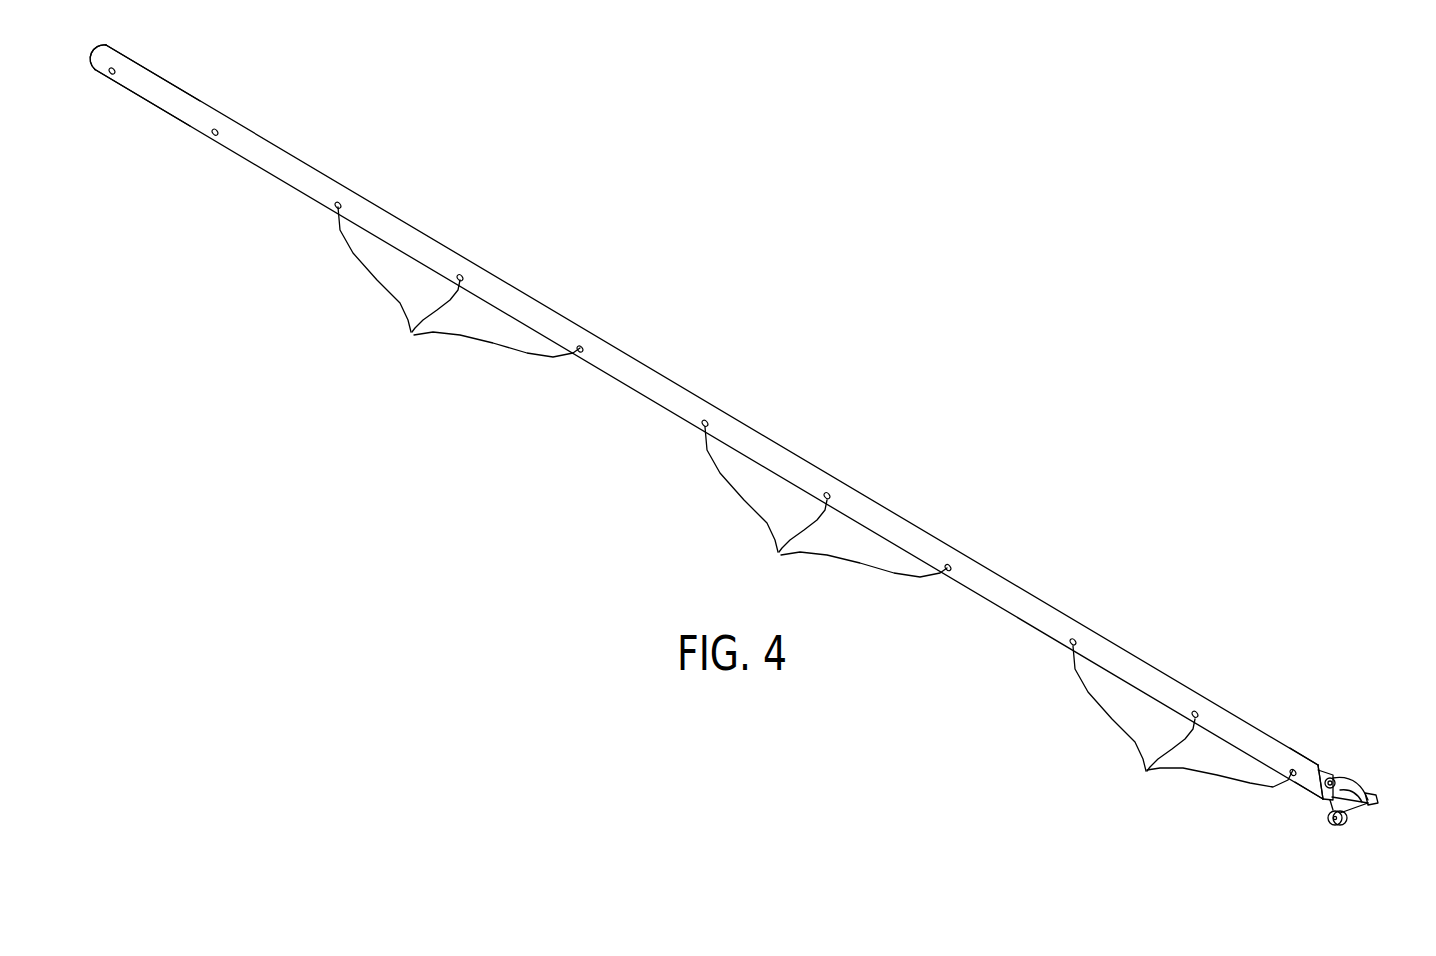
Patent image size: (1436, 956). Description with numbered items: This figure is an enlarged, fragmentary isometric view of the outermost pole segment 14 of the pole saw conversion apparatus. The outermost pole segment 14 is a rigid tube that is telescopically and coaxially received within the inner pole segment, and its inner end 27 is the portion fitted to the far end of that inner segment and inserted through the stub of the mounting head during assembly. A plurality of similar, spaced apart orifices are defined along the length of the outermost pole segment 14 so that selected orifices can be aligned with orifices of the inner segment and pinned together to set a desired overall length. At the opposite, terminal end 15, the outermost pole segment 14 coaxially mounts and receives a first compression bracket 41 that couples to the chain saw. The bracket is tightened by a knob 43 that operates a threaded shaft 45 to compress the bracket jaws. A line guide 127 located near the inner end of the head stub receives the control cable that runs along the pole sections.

The outermost pole segment 14 is at (785, 458).
The inner end 27 is at (168, 93).
The terminal end 15 is at (1310, 784).
The line guide 127 is at (1318, 765).
The first compression bracket 41 is at (1355, 773).
The knob 43 is at (1341, 826).
The threaded shaft 45 is at (1367, 798).